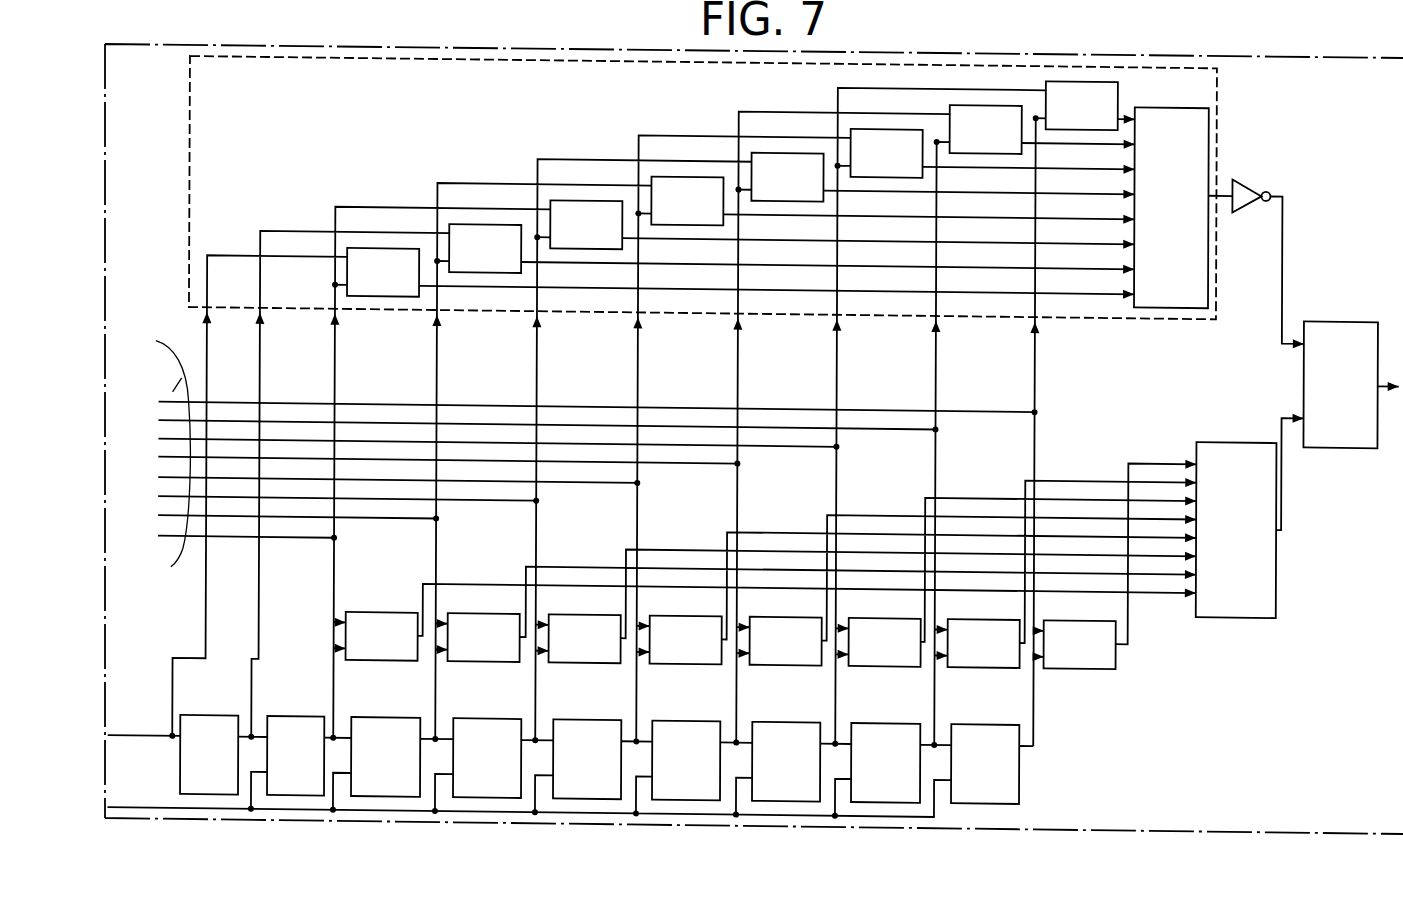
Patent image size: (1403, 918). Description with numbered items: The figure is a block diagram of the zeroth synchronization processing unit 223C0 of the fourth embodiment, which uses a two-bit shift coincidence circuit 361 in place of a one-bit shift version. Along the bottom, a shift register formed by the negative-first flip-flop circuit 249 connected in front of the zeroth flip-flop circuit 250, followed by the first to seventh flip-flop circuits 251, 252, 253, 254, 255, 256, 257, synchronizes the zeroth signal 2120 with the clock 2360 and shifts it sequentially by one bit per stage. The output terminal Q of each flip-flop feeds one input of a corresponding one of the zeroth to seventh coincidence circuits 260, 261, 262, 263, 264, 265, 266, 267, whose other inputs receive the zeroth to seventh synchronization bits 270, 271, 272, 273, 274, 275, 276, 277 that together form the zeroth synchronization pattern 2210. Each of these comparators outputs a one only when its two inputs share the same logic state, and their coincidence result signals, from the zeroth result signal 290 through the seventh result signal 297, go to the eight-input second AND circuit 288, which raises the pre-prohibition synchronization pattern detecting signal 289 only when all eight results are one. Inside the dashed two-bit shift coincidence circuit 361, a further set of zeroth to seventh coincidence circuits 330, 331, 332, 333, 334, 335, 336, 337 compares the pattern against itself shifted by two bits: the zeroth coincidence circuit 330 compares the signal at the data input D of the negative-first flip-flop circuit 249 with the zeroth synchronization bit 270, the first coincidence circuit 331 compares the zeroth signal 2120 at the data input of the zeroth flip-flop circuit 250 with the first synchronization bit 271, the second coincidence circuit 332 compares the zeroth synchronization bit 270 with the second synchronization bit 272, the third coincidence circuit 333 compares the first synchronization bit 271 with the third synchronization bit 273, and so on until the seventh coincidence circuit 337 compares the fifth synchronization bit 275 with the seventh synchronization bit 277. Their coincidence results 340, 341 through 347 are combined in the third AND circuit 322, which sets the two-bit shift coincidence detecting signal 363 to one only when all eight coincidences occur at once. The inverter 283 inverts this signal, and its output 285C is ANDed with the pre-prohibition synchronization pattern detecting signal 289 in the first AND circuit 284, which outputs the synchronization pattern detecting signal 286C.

The zeroth synchronization processing unit 223C0 is at (1268, 55).
The zeroth synchronization pattern 2210 is at (590, 412).
The zeroth signal 2120 is at (120, 735).
The clock 2360 is at (116, 807).
The third AND circuit 322 is at (1158, 295).
The two-bit shift coincidence circuit 361 is at (1218, 85).
The zeroth coincidence circuit 330 is at (348, 250).
The first coincidence circuit 331 is at (450, 228).
The second coincidence circuit 332 is at (551, 200).
The third coincidence circuit 333 is at (652, 178).
The fourth coincidence circuit 334 is at (752, 152).
The fifth coincidence circuit 335 is at (851, 128).
The sixth coincidence circuit 336 is at (950, 100).
The seventh coincidence circuit 337 is at (1046, 76).
The coincidence result 340 is at (494, 283).
The coincidence result 341 is at (596, 282).
The coincidence result 347 is at (1119, 106).
The two-bit shift coincidence detecting signal 363 is at (1221, 184).
The inverter 283 is at (1246, 163).
The output of the inverter 285C is at (1284, 229).
The first AND circuit 284 is at (1319, 308).
The synchronization pattern detecting signal 286C is at (1387, 368).
The second AND circuit 288 is at (1240, 429).
The pre-prohibition synchronization pattern detecting signal 289 is at (1284, 471).
The coincidence result signal 297 is at (1147, 451).
The coincidence result signal 290 is at (1157, 585).
The zeroth synchronization bit 270 is at (294, 536).
The first synchronization bit 271 is at (383, 515).
The second synchronization bit 272 is at (479, 496).
The third synchronization bit 273 is at (590, 481).
The fourth synchronization bit 274 is at (682, 458).
The fifth synchronization bit 275 is at (784, 440).
The sixth synchronization bit 276 is at (869, 421).
The seventh synchronization bit 277 is at (379, 399).
The zeroth coincidence circuit 260 is at (365, 658).
The first coincidence circuit 261 is at (467, 658).
The second coincidence circuit 262 is at (568, 658).
The third coincidence circuit 263 is at (669, 658).
The fourth coincidence circuit 264 is at (769, 658).
The fifth coincidence circuit 265 is at (868, 658).
The sixth coincidence circuit 266 is at (967, 658).
The seventh coincidence circuit 267 is at (1064, 658).
The negative-first flip-flop circuit 249 is at (205, 714).
The zeroth flip-flop circuit 250 is at (285, 713).
The first flip-flop circuit 251 is at (370, 713).
The second flip-flop circuit 252 is at (472, 713).
The third flip-flop circuit 253 is at (573, 713).
The fourth flip-flop circuit 254 is at (674, 713).
The fifth flip-flop circuit 255 is at (774, 713).
The sixth flip-flop circuit 256 is at (873, 713).
The seventh flip-flop circuit 257 is at (970, 712).